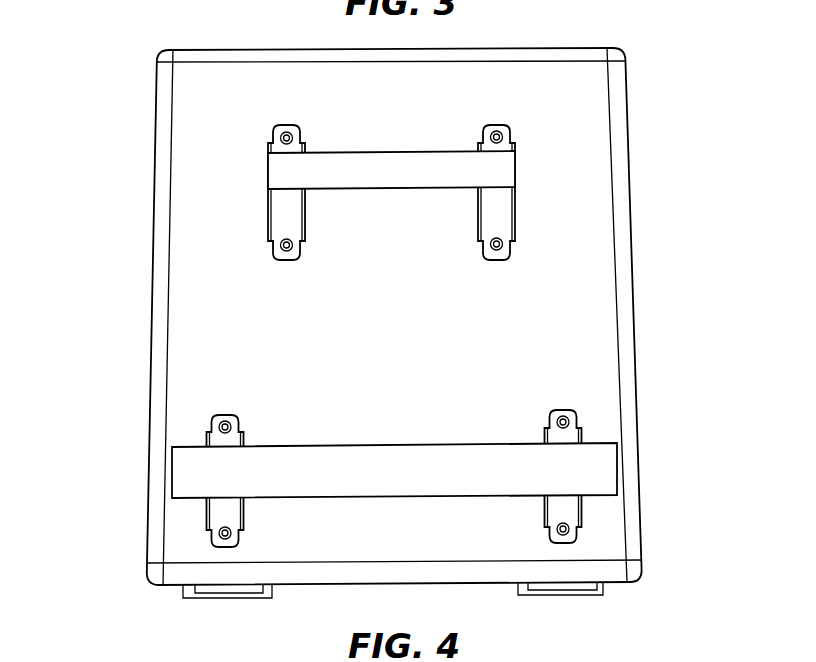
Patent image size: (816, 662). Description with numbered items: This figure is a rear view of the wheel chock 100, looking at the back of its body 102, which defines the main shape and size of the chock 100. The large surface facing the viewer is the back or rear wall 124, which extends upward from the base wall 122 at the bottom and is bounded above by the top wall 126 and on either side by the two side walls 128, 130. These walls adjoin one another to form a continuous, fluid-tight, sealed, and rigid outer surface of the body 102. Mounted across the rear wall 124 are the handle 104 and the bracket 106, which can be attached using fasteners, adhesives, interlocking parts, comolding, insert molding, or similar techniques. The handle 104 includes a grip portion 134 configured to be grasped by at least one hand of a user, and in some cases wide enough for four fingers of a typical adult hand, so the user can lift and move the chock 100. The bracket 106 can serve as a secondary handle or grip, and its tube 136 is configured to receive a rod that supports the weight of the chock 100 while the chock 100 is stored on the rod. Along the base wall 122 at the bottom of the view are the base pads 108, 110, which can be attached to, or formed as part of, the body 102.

The wheel chock 100 is at (401, 327).
The body 102 is at (401, 327).
The handle 104 is at (505, 170).
The bracket 106 is at (605, 468).
The base pad 108 is at (570, 597).
The base pad 110 is at (220, 600).
The base wall 122 is at (472, 583).
The rear wall 124 is at (598, 345).
The top wall 126 is at (228, 50).
The side wall 128 is at (632, 253).
The side wall 130 is at (155, 244).
The grip portion 134 is at (383, 163).
The tube 136 is at (385, 458).